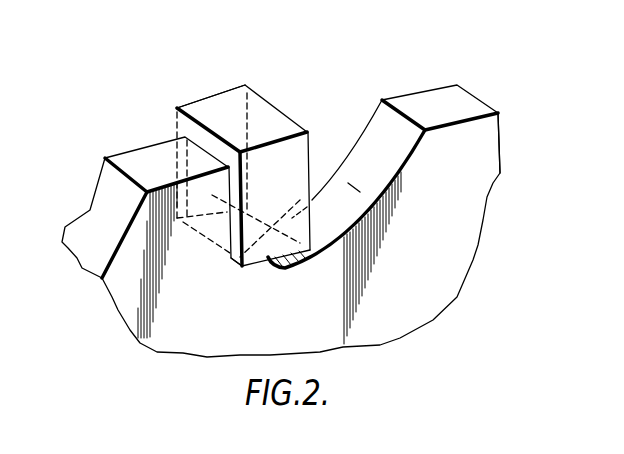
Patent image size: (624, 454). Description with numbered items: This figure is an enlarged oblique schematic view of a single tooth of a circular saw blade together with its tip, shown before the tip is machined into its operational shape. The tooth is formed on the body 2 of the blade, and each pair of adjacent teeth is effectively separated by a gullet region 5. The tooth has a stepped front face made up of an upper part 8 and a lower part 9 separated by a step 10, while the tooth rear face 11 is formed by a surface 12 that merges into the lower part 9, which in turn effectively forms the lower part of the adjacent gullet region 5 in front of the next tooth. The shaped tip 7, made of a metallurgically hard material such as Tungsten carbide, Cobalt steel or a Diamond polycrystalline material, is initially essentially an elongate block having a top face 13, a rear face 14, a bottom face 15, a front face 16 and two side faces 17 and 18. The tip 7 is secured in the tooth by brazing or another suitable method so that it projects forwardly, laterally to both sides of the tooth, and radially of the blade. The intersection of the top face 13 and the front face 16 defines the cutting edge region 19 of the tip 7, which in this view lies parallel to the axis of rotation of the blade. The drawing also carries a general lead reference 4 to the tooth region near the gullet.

The body 2 is at (232, 331).
The side wall of groove 4 is at (142, 228).
The gullet region 5 is at (368, 168).
The shaped tip 7 is at (203, 97).
The upper part of front face 8 is at (225, 197).
The lower part of front face 9 is at (308, 265).
The step 10 is at (235, 262).
The tooth rear face 11 is at (112, 185).
The surface 12 is at (93, 208).
The top face 13 is at (203, 108).
The rear face 14 is at (202, 135).
The bottom face 15 is at (248, 258).
The front face 16 is at (297, 158).
The side face 17 is at (310, 228).
The side face 18 is at (188, 123).
The cutting edge region 19 is at (277, 108).